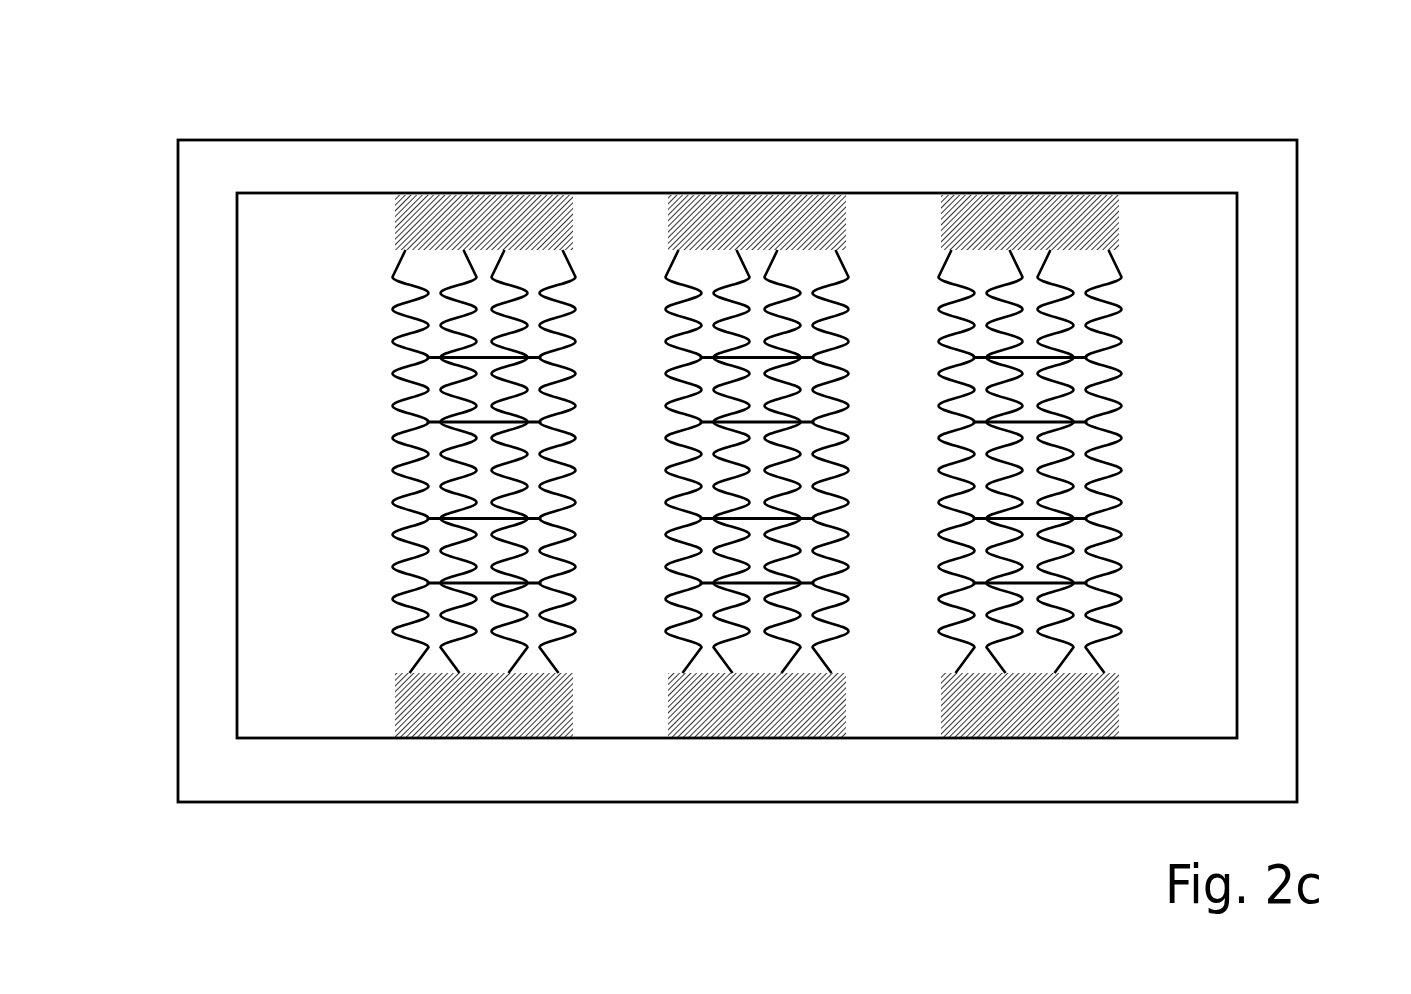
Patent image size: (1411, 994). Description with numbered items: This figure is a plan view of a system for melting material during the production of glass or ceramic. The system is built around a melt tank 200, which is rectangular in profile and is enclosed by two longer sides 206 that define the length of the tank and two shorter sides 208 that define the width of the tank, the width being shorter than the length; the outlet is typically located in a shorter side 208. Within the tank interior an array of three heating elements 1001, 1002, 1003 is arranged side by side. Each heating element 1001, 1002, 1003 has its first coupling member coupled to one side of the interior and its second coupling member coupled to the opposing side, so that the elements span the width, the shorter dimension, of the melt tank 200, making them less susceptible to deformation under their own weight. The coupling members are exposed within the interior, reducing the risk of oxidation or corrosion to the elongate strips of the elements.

The melt tank 200 is at (143, 231).
The first heating element 1001 is at (503, 195).
The second heating element 1002 is at (753, 195).
The third heating element 1003 is at (1033, 195).
The longer side 206 is at (1122, 140).
The shorter side 208 is at (1297, 300).